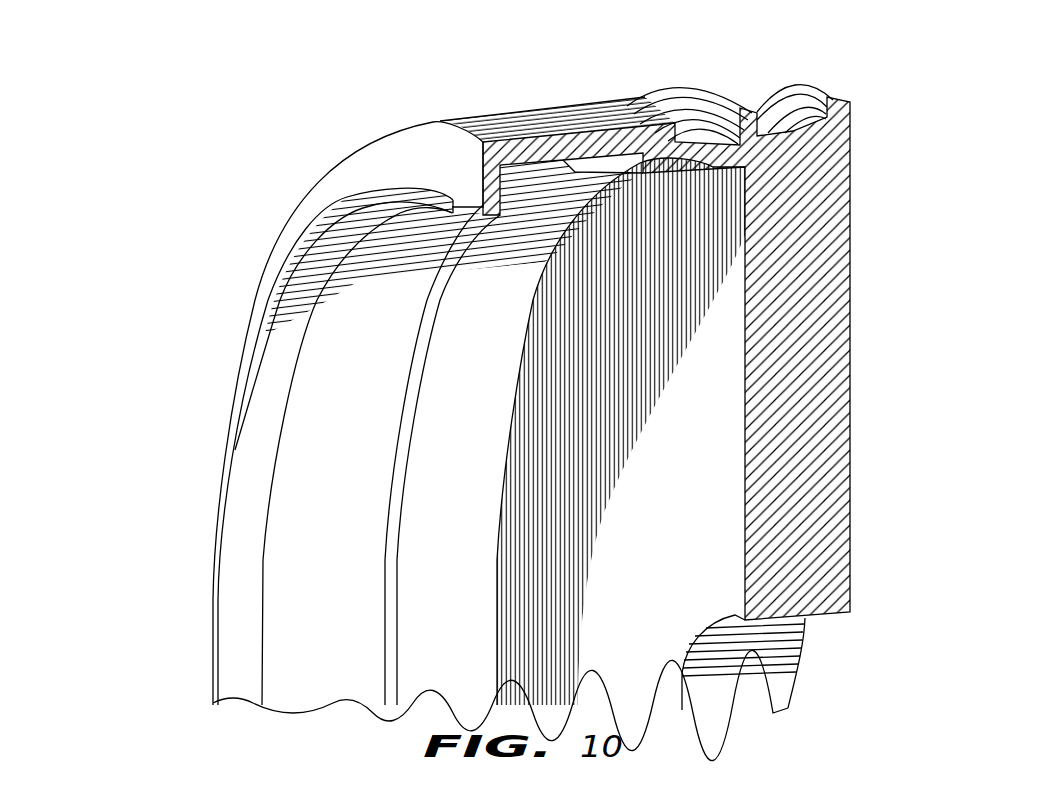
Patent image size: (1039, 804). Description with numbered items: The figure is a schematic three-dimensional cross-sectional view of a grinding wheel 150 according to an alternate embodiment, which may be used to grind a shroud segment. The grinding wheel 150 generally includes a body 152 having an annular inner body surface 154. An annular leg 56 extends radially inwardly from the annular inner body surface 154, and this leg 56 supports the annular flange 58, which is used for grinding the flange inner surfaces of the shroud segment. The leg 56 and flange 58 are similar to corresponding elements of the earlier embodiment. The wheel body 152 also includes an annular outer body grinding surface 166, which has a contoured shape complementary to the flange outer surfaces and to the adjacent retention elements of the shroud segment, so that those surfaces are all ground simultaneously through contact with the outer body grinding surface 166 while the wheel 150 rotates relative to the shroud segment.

The grinding wheel 150 is at (232, 205).
The annular leg 56 is at (417, 148).
The annular flange 58 is at (390, 193).
The annular inner body surface 154 is at (562, 165).
The body 152 is at (852, 358).
The annular outer body grinding surface 166 is at (710, 90).